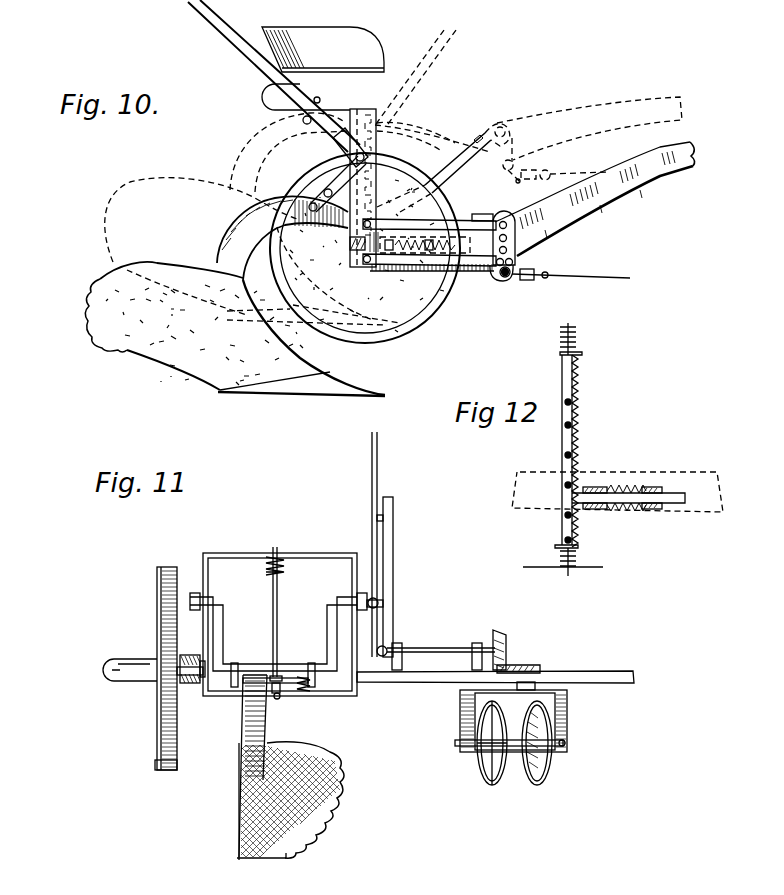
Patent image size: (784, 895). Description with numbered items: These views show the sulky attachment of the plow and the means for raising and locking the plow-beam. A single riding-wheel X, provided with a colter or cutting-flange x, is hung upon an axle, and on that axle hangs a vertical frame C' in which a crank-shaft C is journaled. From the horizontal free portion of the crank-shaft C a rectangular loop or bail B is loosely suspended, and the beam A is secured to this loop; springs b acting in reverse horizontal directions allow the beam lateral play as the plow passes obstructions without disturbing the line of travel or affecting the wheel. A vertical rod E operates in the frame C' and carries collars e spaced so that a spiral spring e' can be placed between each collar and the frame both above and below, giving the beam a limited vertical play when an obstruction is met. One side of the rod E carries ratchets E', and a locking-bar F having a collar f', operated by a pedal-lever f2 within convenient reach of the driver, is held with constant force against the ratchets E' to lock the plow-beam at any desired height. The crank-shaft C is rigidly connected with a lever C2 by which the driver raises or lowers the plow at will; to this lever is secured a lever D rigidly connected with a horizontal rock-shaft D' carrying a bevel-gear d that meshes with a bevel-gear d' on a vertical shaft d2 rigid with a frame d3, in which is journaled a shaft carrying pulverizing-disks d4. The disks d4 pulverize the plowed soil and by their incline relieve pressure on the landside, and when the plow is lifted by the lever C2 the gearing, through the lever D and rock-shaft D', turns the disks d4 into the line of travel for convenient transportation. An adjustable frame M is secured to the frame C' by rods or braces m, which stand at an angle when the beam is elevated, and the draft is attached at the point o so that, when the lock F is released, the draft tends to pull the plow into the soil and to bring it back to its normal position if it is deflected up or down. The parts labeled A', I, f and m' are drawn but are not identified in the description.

In FIG. 10, the beam A is at (595, 199).
In FIG. 12, the beam A is at (617, 492).
In FIG. 10, the plow body / share A' is at (270, 254).
In FIG. 11, the plow body / share A' is at (290, 767).
In FIG. 10, the springs b is at (313, 199).
In FIG. 11, the springs b is at (242, 688).
In FIG. 11, the rectangular loop B is at (285, 683).
In FIG. 11, the crank-shaft C is at (278, 624).
In FIG. 11, the vertical frame C' is at (370, 626).
In FIG. 10, the lever C2 is at (322, 83).
In FIG. 11, the lever C2 is at (363, 544).
In FIG. 11, the lever D is at (394, 577).
In FIG. 11, the rock-shaft D' is at (436, 652).
In FIG. 11, the bevel-gear d is at (503, 645).
In FIG. 11, the bevel-gear d' is at (526, 661).
In FIG. 11, the vertical shaft d2 is at (534, 689).
In FIG. 11, the frame d3 is at (560, 718).
In FIG. 11, the pulverizing-disks d4 is at (509, 752).
In FIG. 12, the vertical rod E is at (556, 450).
In FIG. 11, the vertical rod E is at (287, 612).
In FIG. 12, the ratchets E' is at (588, 451).
In FIG. 12, the collars e is at (587, 449).
In FIG. 11, the collars e is at (288, 624).
In FIG. 12, the spiral spring e' is at (566, 443).
In FIG. 11, the spiral spring e' is at (267, 640).
In FIG. 12, the locking-bar F is at (584, 507).
In FIG. 12, the collar f is at (614, 514).
In FIG. 12, the collar f' is at (652, 515).
In FIG. 10, the pedal-lever f2 is at (490, 199).
In FIG. 10, the bar I is at (352, 247).
In FIG. 11, the bar I is at (495, 687).
In FIG. 10, the rods m is at (439, 246).
In FIG. 10, the bolt m' is at (495, 279).
In FIG. 10, the adjustable frame M is at (518, 265).
In FIG. 10, the draft point o is at (513, 282).
In FIG. 11, the riding-wheel X is at (154, 668).
In FIG. 11, the colter or cutting-flange x is at (164, 776).